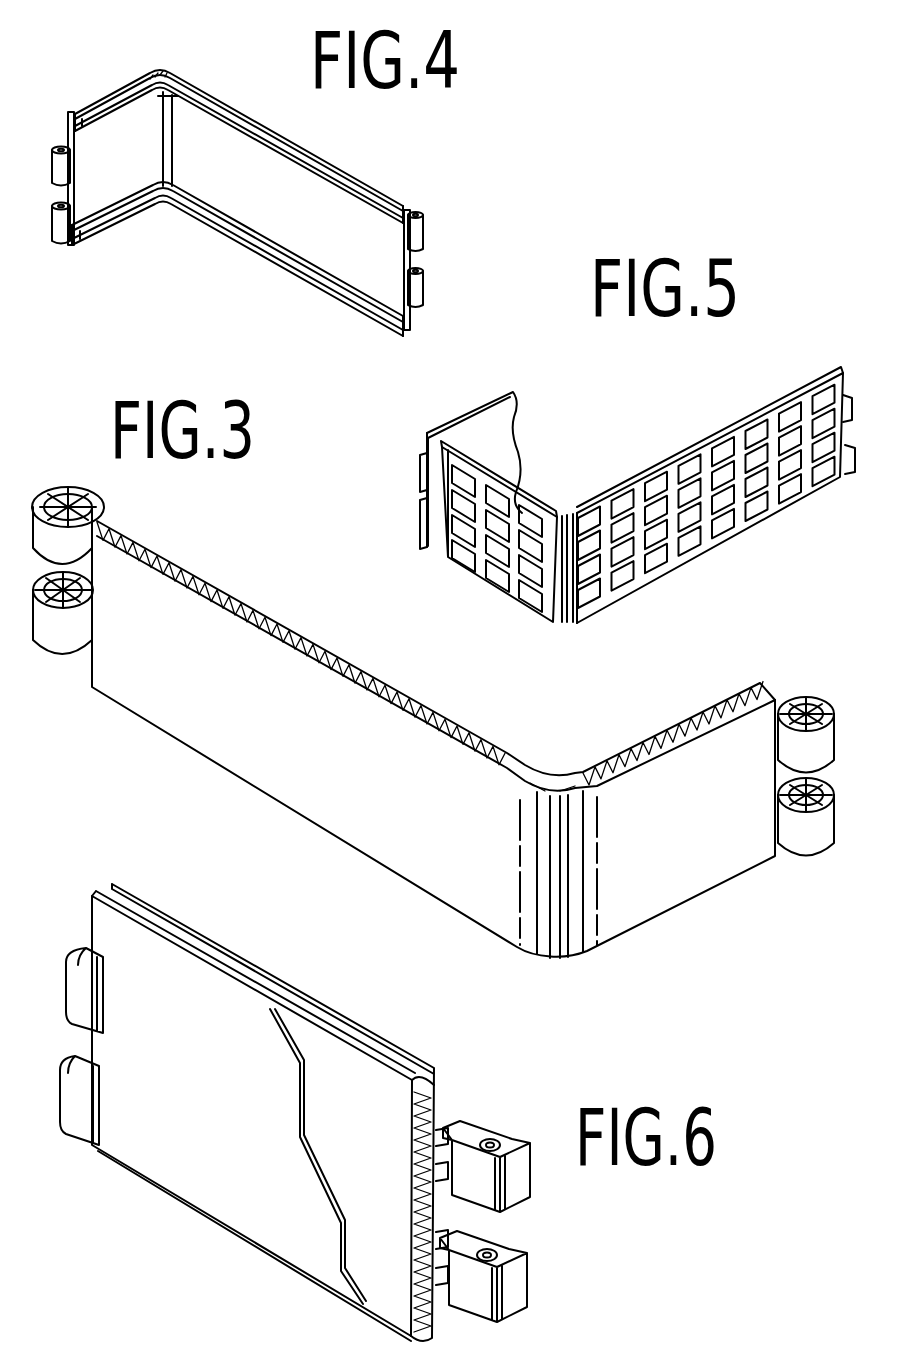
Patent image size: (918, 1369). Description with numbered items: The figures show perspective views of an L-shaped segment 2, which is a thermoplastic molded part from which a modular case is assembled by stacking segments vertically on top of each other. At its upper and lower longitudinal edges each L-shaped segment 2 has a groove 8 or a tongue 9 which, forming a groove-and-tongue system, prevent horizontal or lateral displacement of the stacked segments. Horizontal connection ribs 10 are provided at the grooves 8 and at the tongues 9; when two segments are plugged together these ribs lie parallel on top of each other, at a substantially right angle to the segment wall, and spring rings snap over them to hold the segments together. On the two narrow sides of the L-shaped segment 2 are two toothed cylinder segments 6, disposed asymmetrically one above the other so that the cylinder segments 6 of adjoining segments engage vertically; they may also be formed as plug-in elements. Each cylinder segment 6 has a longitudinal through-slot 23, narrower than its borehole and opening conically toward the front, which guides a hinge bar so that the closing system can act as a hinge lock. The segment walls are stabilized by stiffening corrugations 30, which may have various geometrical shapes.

In FIG. 4, the L-shaped segment 2 is at (218, 235).
In FIG. 5, the L-shaped segment 2 is at (641, 495).
In FIG. 3, the L-shaped segment 2 is at (441, 739).
In FIG. 6, the L-shaped segment 2 is at (356, 1024).
In FIG. 4, the cylinder segment 6 is at (50, 165).
In FIG. 5, the cylinder segment 6 is at (420, 510).
In FIG. 3, the cylinder segment 6 is at (834, 807).
In FIG. 6, the cylinder segment 6 is at (499, 1128).
In FIG. 4, the groove 8 is at (68, 116).
In FIG. 4, the tongue 9 is at (398, 338).
In FIG. 4, the connection rib 10 is at (353, 197).
In FIG. 3, the longitudinal through-slot 23 is at (790, 700).
In FIG. 5, the stiffening corrugation 30 is at (762, 513).